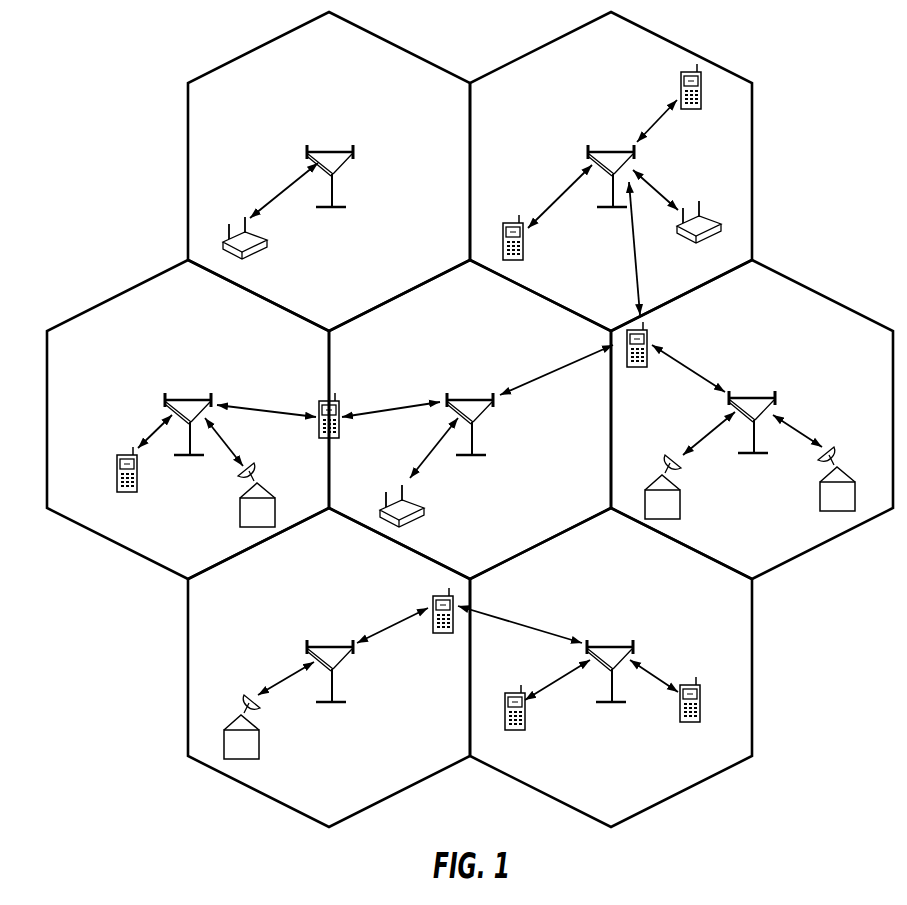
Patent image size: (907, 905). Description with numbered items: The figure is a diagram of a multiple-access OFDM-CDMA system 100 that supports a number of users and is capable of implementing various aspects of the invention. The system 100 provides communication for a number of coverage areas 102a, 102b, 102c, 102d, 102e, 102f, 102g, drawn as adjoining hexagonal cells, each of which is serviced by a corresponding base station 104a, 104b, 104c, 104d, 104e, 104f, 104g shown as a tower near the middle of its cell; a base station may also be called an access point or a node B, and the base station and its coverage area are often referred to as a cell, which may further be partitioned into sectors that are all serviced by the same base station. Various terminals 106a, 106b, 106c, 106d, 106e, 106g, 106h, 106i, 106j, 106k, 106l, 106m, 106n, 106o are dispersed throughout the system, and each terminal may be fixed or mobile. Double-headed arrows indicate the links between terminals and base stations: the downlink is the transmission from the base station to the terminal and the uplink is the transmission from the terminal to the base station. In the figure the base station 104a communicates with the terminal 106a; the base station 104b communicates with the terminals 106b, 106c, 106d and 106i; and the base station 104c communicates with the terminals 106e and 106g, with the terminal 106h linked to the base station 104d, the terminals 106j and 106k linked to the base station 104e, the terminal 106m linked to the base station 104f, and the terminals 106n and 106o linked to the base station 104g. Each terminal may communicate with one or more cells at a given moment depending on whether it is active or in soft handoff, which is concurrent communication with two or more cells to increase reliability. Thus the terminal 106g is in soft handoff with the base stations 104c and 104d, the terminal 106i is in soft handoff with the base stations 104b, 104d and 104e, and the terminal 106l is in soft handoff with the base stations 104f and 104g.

The multiple-access OFDM-CDMA system 100 is at (842, 43).
The coverage area 102a is at (259, 47).
The coverage area 102b is at (684, 48).
The coverage area 102c is at (118, 295).
The coverage area 102d is at (492, 302).
The coverage area 102e is at (822, 295).
The coverage area 102f is at (187, 672).
The coverage area 102g is at (753, 672).
The base station 104a is at (337, 151).
The base station 104b is at (612, 151).
The base station 104c is at (183, 399).
The base station 104d is at (466, 399).
The base station 104e is at (761, 397).
The base station 104f is at (326, 646).
The base station 104g is at (623, 646).
The terminal 106a is at (268, 240).
The terminal 106b is at (508, 222).
The terminal 106c is at (681, 82).
The terminal 106d is at (717, 217).
The terminal 106e is at (117, 470).
The terminal 106g is at (319, 406).
The terminal 106h is at (428, 508).
The terminal 106i is at (650, 340).
The terminal 106j is at (650, 483).
The terminal 106k is at (850, 475).
The terminal 106l is at (433, 596).
The terminal 106m is at (232, 722).
The terminal 106n is at (508, 693).
The terminal 106o is at (695, 685).